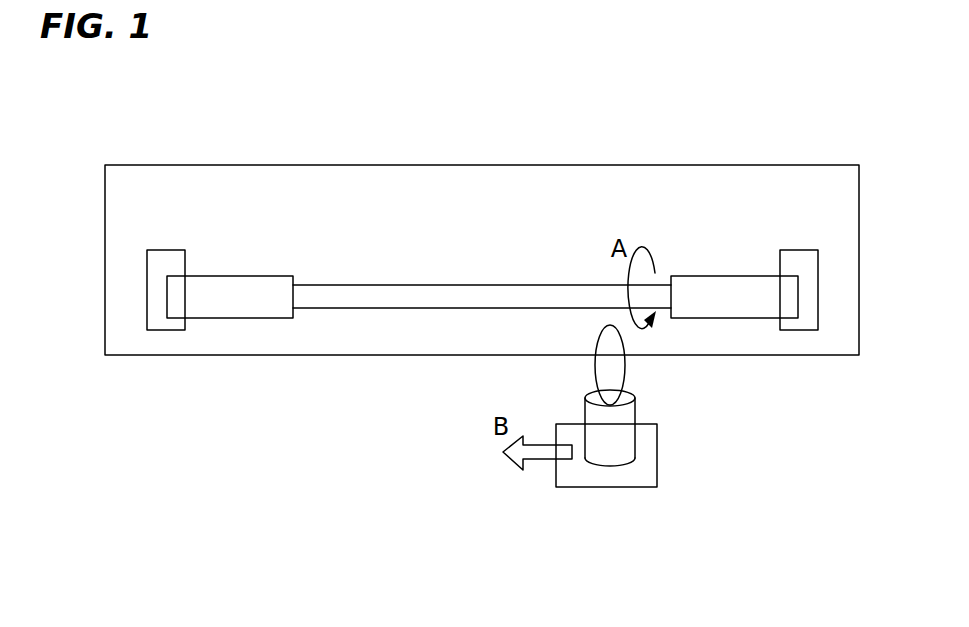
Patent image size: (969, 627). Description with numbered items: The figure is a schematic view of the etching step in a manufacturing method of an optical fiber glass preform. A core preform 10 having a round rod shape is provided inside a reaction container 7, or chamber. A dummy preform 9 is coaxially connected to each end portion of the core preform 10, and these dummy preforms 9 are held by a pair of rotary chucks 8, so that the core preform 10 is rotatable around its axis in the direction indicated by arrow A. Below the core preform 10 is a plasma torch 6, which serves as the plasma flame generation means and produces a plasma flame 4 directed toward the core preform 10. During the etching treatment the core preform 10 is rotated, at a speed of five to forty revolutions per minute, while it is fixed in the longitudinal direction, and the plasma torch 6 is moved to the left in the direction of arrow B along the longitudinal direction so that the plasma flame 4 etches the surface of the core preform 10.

The plasma flame 4 is at (613, 372).
The plasma torch 6 is at (622, 457).
The reaction container 7 is at (585, 164).
The rotary chuck 8 is at (163, 262).
The dummy preform 9 is at (213, 287).
The core preform 10 is at (385, 295).